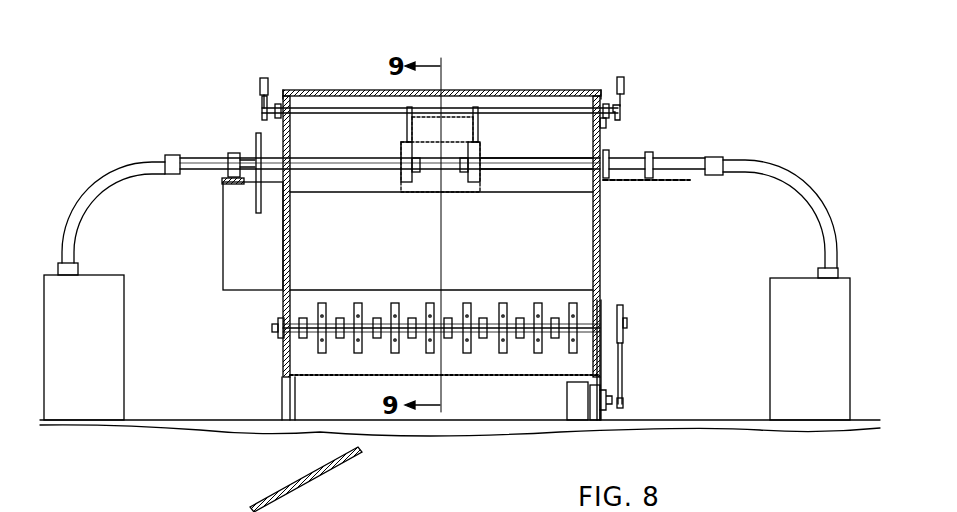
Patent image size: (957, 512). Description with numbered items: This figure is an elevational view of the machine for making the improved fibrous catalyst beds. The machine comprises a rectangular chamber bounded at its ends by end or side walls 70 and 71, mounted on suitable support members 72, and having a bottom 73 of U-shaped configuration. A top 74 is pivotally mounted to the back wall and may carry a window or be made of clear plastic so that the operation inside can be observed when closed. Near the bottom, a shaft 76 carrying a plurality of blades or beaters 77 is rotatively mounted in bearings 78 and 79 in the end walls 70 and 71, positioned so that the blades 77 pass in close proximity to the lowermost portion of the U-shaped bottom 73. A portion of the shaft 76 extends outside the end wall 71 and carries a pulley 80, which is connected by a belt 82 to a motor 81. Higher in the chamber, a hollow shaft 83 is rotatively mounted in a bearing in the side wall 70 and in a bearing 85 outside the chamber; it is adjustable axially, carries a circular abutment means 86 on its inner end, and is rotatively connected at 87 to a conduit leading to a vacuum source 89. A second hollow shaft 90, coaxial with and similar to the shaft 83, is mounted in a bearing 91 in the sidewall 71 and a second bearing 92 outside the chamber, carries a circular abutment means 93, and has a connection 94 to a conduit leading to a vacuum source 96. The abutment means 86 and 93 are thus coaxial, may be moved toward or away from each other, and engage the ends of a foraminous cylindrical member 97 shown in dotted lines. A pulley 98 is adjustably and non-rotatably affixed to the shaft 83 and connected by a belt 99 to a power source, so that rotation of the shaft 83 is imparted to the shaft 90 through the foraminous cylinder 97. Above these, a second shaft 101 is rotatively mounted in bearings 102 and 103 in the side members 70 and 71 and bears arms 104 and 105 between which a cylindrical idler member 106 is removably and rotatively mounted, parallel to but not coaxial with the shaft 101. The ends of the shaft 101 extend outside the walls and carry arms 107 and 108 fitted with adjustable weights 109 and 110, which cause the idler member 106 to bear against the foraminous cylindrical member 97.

The end wall 70 is at (290, 252).
The end wall 71 is at (597, 240).
The support members 72 is at (282, 392).
The bottom 73 is at (475, 378).
The top 74 is at (312, 90).
The shaft 76 is at (365, 325).
The blades or beaters 77 is at (357, 345).
The bearing 78 is at (278, 335).
The bearing 79 is at (600, 325).
The pulley 80 is at (623, 315).
The motor 81 is at (567, 398).
The belt 82 is at (622, 367).
The shaft 83 is at (340, 170).
The bearing 85 is at (235, 153).
The circular abutment means 86 is at (404, 180).
The rotative connection 87 is at (172, 155).
The vacuum source 89 is at (112, 330).
The second hollow shaft 90 is at (545, 170).
The bearing 91 is at (609, 158).
The second bearing 92 is at (655, 152).
The circular abutment means 93 is at (476, 182).
The connection 94 is at (722, 156).
The vacuum source 96 is at (775, 335).
The foraminous cylindrical member 97 is at (425, 195).
The pulley 98 is at (255, 184).
The belt 99 is at (258, 213).
The second shaft 101 is at (472, 167).
The bearing 102 is at (280, 119).
The bearing 103 is at (600, 130).
The arm 104 is at (405, 118).
The arm 105 is at (480, 122).
The cylindrical idler member 106 is at (457, 116).
The arm 107 is at (622, 110).
The arm 108 is at (258, 112).
The adjustable weight 109 is at (626, 76).
The adjustable weight 110 is at (258, 80).